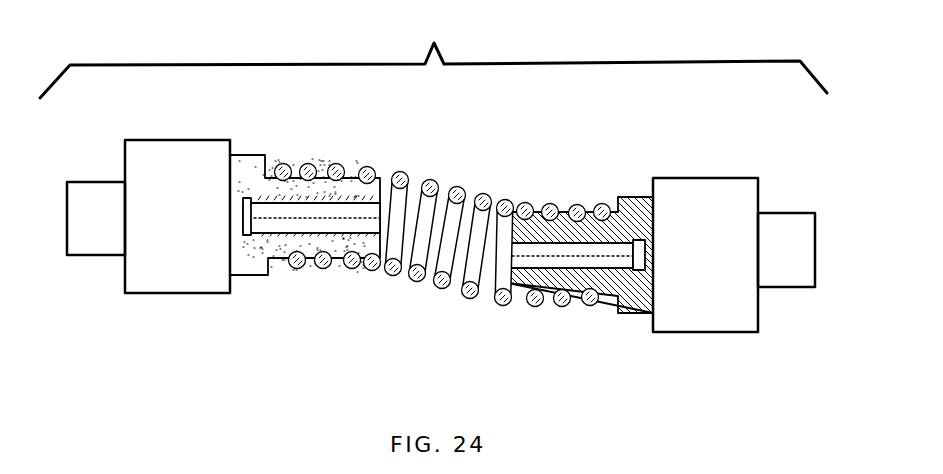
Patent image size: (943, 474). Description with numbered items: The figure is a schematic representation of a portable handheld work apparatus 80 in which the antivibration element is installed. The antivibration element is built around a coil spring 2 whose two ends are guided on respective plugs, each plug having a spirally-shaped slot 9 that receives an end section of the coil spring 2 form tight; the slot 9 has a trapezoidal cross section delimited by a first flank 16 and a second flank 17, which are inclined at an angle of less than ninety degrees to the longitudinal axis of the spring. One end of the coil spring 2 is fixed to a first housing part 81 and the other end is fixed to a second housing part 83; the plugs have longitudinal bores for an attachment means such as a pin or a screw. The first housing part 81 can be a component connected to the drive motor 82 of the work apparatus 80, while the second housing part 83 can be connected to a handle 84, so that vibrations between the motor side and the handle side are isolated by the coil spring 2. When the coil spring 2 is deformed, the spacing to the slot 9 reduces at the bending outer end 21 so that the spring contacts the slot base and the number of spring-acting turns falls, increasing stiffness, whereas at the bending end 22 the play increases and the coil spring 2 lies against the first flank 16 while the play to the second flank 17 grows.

The portable handheld work apparatus 80 is at (433, 52).
The first housing part 81 is at (160, 293).
The drive motor 82 is at (80, 256).
The second housing part 83 is at (720, 332).
The handle 84 is at (780, 287).
The coil spring 2 is at (460, 187).
The slot 9 is at (291, 266).
The first flank 16 is at (318, 267).
The second flank 17 is at (346, 267).
The bending outer end 21 is at (339, 151).
The bending end 22 is at (329, 322).